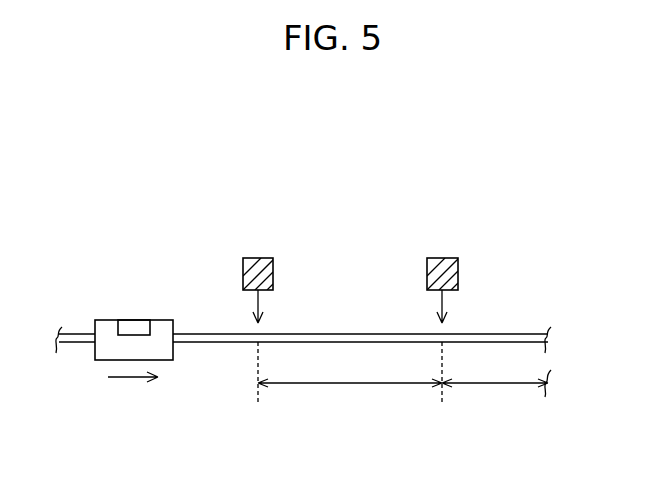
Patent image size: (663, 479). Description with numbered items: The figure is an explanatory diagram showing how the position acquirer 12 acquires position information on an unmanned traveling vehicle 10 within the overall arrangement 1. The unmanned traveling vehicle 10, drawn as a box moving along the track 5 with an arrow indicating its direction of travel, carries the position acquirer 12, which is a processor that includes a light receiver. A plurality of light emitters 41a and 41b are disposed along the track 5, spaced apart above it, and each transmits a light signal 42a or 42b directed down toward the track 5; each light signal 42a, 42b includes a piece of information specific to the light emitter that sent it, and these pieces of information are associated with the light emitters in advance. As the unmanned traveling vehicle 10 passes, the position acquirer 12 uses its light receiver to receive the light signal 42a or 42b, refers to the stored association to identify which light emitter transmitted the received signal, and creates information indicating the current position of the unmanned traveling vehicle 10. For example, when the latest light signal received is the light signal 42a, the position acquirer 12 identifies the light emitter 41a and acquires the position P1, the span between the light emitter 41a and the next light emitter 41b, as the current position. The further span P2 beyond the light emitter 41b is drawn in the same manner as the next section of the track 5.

The sheet conveyance system 1 is at (513, 188).
The track 5 is at (522, 335).
The unmanned traveling vehicle 10 is at (107, 350).
The position acquirer 12 is at (132, 323).
The light emitter 41a is at (263, 258).
The light emitter 41b is at (447, 258).
The light signal 42a is at (260, 305).
The light signal 42b is at (444, 305).
The position P1 is at (350, 385).
The distance P2 is at (498, 385).